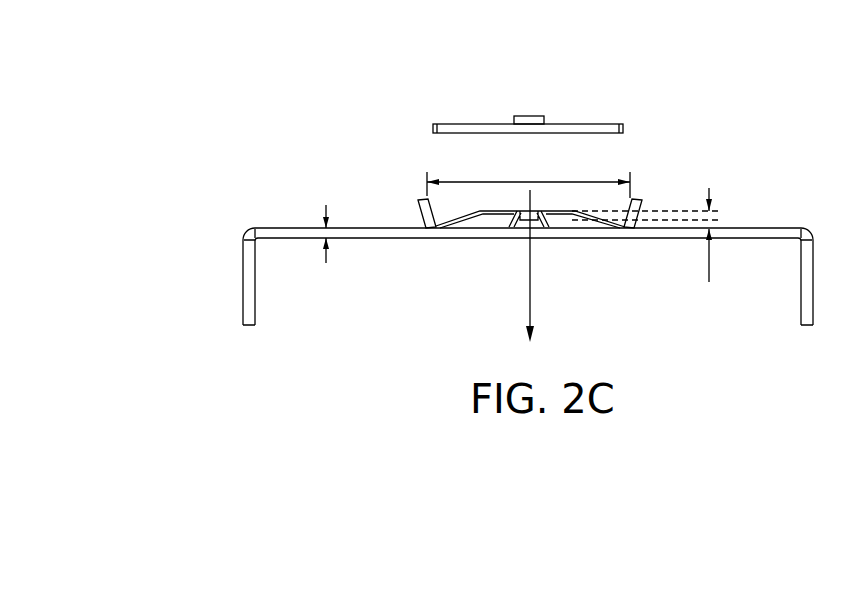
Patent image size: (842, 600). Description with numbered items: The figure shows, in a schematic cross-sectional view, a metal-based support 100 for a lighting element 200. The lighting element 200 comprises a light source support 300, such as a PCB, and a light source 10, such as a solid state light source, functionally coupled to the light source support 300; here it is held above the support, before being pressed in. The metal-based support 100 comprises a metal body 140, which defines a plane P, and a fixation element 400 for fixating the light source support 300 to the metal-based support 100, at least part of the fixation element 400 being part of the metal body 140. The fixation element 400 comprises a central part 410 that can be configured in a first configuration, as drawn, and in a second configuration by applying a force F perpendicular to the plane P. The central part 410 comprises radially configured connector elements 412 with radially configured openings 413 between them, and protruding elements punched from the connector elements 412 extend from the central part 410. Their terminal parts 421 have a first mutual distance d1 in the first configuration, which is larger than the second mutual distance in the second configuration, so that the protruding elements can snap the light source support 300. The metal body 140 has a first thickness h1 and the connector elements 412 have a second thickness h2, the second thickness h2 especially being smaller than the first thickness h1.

The metal-based support 100 is at (220, 309).
The metal body 140 is at (248, 233).
The plane P is at (765, 228).
The lighting element 200 is at (606, 90).
The light source support 300 is at (463, 124).
The light source 10 is at (525, 116).
The fixation element 400 is at (524, 267).
The central part 410 is at (532, 211).
The connector elements 412 is at (500, 222).
The radially configured openings 413 is at (541, 226).
The terminal parts 421 is at (419, 199).
The force F is at (530, 308).
The first mutual distance d1 is at (528, 172).
The first thickness h1 is at (308, 241).
The second thickness h2 is at (645, 241).